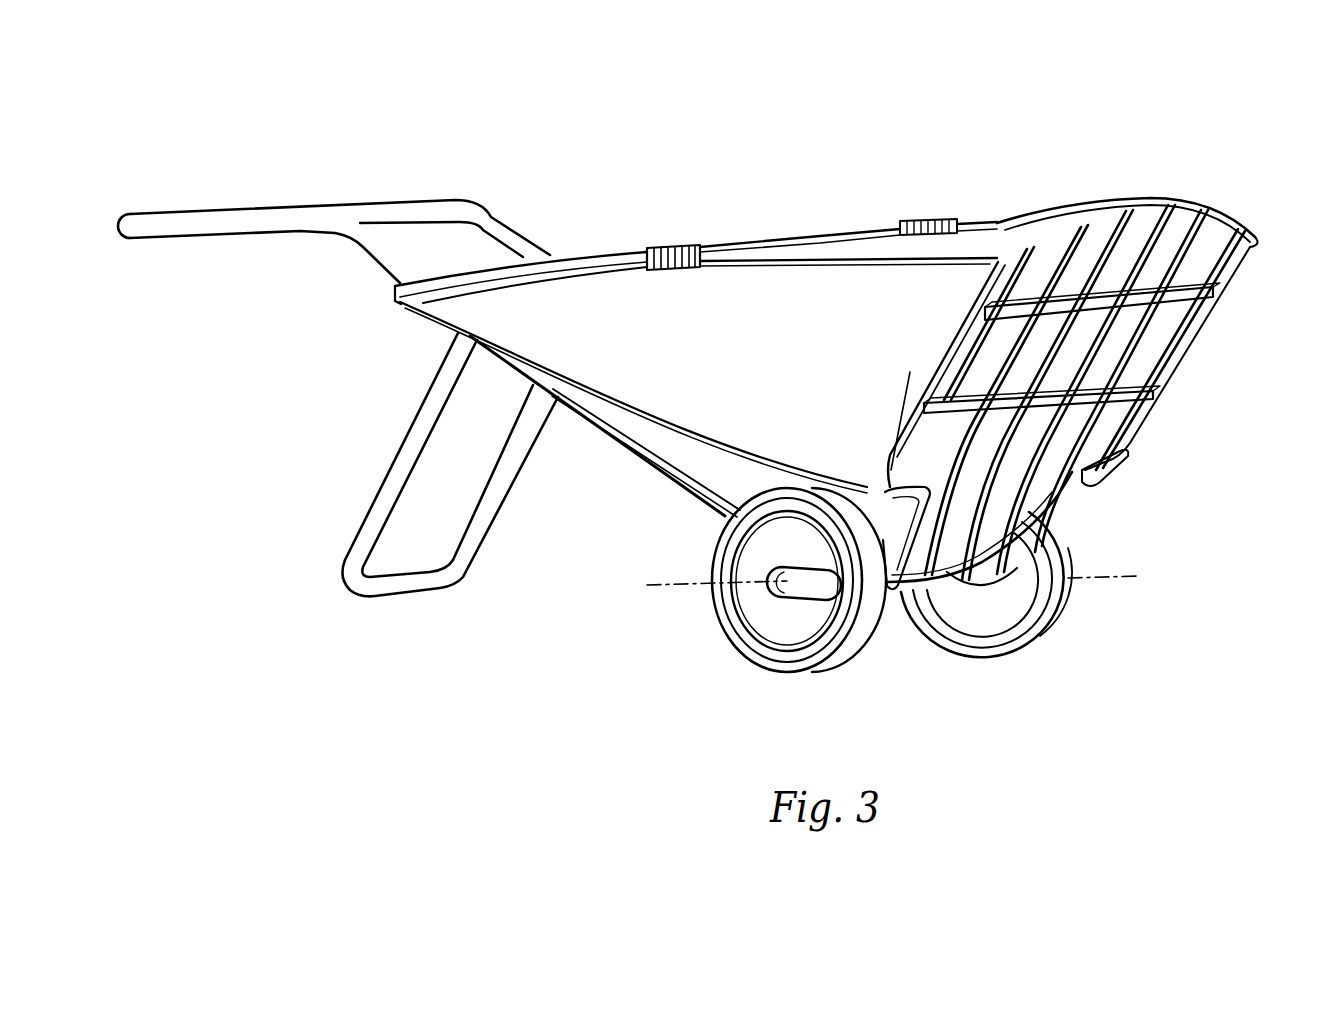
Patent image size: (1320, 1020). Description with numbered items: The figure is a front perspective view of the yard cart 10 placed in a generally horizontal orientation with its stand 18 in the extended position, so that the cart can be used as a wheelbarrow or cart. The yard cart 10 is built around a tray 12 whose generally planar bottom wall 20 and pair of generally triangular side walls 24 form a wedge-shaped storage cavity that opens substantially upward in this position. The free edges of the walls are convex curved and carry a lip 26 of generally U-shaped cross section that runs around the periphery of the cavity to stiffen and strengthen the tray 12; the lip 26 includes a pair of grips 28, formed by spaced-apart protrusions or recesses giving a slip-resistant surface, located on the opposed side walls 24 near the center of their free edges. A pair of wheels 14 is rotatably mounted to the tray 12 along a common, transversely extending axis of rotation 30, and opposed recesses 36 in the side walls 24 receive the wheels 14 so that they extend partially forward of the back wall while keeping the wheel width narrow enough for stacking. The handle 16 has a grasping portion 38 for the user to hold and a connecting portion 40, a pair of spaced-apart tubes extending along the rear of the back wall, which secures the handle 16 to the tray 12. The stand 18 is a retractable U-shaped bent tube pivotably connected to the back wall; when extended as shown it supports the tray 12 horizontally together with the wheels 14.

The yard cart 10 is at (671, 136).
The tray 12 is at (862, 234).
The wheels 14 is at (719, 612).
The handle 16 is at (303, 233).
The stand 18 is at (500, 490).
The bottom wall 20 is at (1129, 447).
The side walls 24 is at (588, 250).
The lip 26 is at (1256, 246).
The grips 28 is at (690, 246).
The axis of rotation 30 is at (657, 587).
The recesses 36 is at (1087, 474).
The grasping portion 38 is at (232, 239).
The connecting portion 40 is at (605, 428).